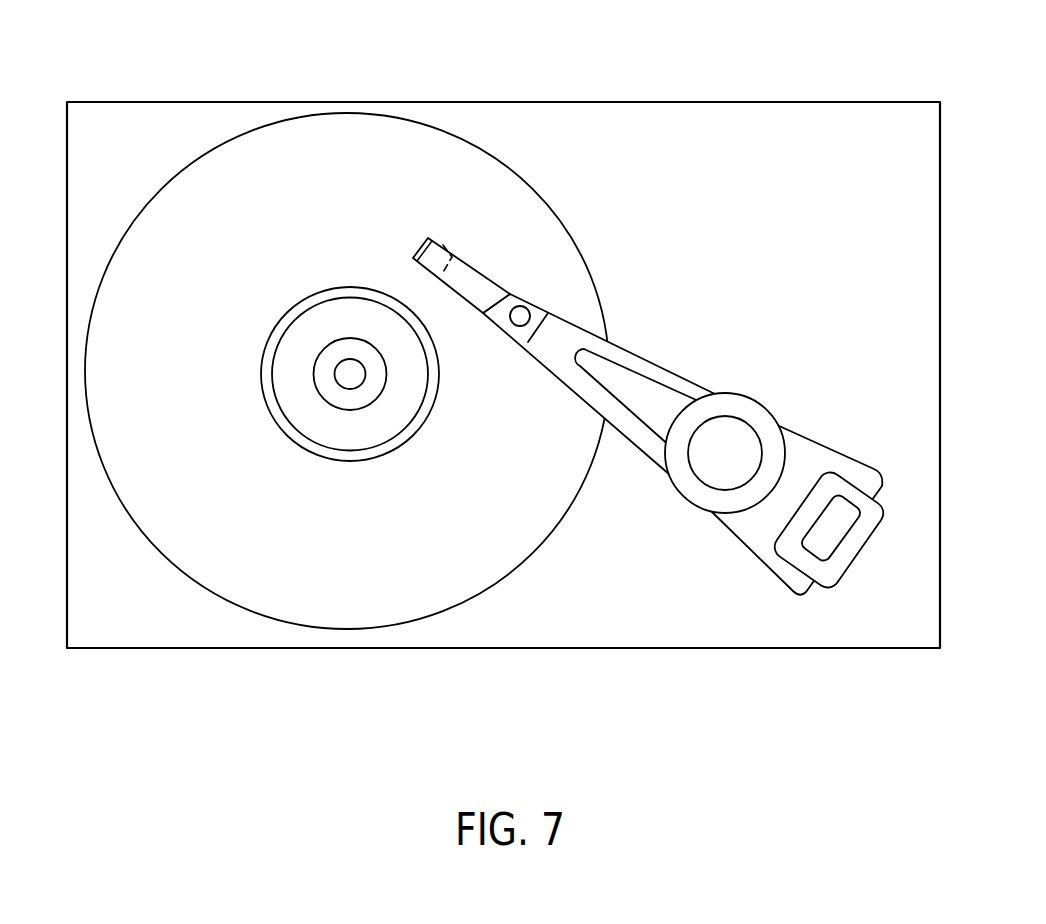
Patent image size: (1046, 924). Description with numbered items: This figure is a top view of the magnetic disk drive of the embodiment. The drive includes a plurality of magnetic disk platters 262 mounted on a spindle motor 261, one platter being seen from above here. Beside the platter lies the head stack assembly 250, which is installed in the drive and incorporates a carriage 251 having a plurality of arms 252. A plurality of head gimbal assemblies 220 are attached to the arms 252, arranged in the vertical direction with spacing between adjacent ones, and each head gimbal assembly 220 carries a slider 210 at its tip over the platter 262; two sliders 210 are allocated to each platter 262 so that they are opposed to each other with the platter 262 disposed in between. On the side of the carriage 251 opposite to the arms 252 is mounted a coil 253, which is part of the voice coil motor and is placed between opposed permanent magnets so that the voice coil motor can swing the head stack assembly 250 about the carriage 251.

The slider 210 is at (443, 245).
The head gimbal assembly 220 is at (483, 313).
The head stack assembly 250 is at (731, 536).
The carriage 251 is at (737, 393).
The arm 252 is at (643, 452).
The coil 253 is at (866, 543).
The spindle motor 261 is at (350, 389).
The magnetic disk platter 262 is at (255, 615).